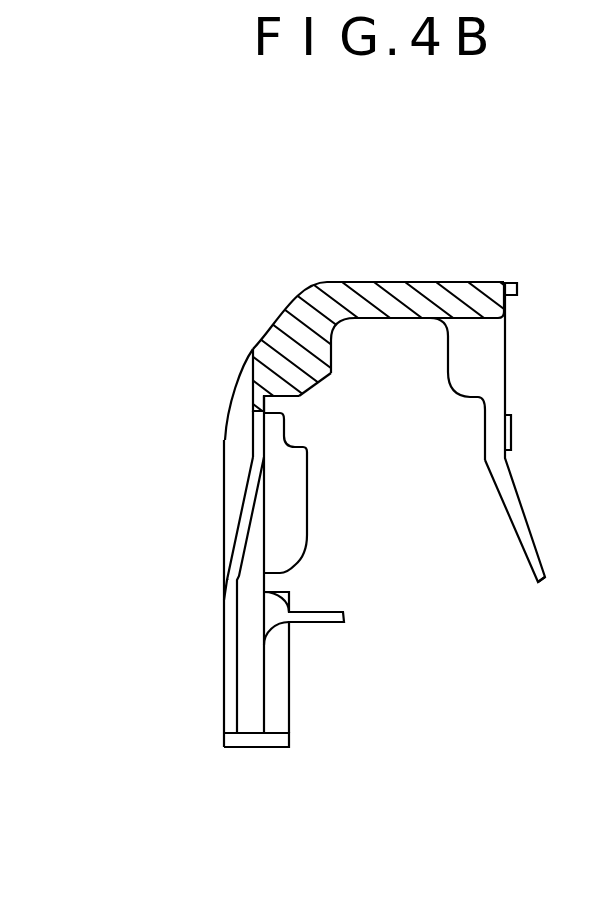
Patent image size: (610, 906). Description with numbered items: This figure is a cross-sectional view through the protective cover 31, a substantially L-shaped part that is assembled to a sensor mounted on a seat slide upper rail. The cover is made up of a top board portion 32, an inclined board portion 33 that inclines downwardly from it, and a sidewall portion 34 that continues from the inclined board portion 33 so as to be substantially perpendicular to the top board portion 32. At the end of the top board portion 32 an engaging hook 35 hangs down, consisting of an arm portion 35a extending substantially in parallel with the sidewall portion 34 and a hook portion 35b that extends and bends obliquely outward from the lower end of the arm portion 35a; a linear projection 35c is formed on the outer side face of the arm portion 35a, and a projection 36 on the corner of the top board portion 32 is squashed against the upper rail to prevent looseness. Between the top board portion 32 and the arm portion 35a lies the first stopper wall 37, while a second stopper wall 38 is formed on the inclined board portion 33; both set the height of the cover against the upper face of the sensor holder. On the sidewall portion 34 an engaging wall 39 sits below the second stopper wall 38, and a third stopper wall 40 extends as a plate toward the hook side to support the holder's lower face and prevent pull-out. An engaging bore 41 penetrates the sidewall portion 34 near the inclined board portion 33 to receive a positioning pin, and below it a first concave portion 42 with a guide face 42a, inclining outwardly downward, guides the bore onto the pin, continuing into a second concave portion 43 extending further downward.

The protective cover 31 is at (238, 301).
The top board portion 32 is at (441, 286).
The inclined board portion 33 is at (284, 302).
The sidewall portion 34 is at (227, 471).
The engaging hook 35 is at (545, 432).
The arm portion 35a is at (505, 356).
The hook portion 35b is at (531, 536).
The linear projection 35c is at (512, 436).
The projection 36 is at (518, 289).
The first stopper wall 37 is at (447, 361).
The second stopper wall 38 is at (321, 377).
The engaging wall 39 is at (308, 466).
The third stopper wall 40 is at (345, 616).
The engaging bore 41 is at (256, 412).
The first concave portion 42 is at (252, 544).
The guide face 42a is at (264, 500).
The second concave portion 43 is at (240, 695).